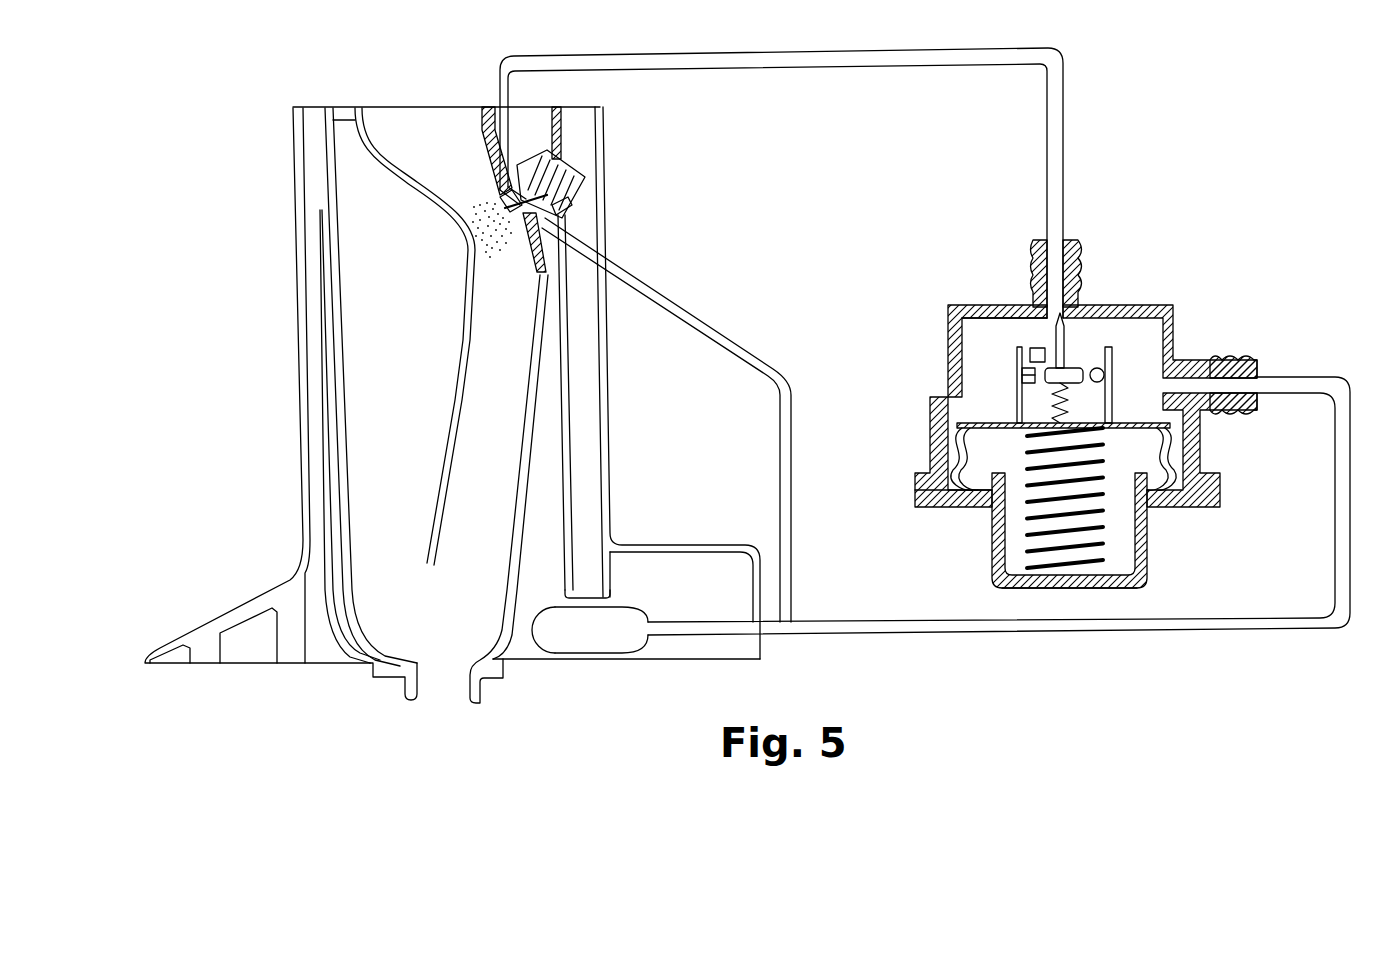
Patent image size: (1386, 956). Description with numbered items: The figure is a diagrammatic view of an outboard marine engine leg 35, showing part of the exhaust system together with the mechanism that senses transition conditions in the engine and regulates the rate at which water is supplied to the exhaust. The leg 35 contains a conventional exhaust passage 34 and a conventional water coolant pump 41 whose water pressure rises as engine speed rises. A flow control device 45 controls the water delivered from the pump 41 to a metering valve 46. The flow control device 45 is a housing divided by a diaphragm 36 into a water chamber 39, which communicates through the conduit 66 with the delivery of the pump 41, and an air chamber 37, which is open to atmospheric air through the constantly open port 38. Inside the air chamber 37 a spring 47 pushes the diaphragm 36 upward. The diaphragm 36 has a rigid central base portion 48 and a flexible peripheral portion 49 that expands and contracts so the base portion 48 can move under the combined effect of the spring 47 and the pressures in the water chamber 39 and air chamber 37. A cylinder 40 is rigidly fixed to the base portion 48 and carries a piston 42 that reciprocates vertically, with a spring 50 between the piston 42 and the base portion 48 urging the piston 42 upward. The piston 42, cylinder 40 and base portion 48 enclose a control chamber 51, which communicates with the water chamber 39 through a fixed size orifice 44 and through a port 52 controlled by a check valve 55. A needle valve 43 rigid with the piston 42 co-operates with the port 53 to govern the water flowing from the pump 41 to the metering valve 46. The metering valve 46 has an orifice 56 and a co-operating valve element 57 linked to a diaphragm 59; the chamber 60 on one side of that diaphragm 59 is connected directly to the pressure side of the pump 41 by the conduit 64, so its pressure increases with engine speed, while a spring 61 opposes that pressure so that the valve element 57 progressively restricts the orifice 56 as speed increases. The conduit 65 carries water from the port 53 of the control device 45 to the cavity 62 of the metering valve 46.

The exhaust passage 34 is at (515, 390).
The outboard marine engine leg 35 is at (290, 438).
The diaphragm 36 is at (1178, 443).
The air chamber 37 is at (1150, 540).
The constantly open port 38 is at (1080, 590).
The water chamber 39 is at (1100, 320).
The cylinder 40 is at (1175, 330).
The water coolant pump 41 is at (590, 640).
The piston 42 is at (1104, 378).
The needle valve 43 is at (1007, 318).
The fixed size orifice 44 is at (1092, 362).
The flow control device 45 is at (1232, 507).
The metering valve 46 is at (575, 140).
The spring 47 is at (1027, 536).
The rigid central base portion 48 is at (962, 440).
The flexible peripheral portion 49 is at (955, 507).
The spring 50 is at (1052, 405).
The control chamber 51 is at (945, 380).
The port 52 is at (1022, 375).
The port 53 is at (1035, 305).
The check valve 55 is at (1030, 352).
The orifice 56 is at (503, 207).
The valve element 57 is at (488, 217).
The diaphragm 59 is at (540, 162).
The chamber 60 is at (567, 200).
The spring 61 is at (580, 163).
The cavity 62 is at (538, 220).
The conduit 64 is at (760, 350).
The conduit 65 is at (1065, 174).
The conduit 66 is at (925, 632).